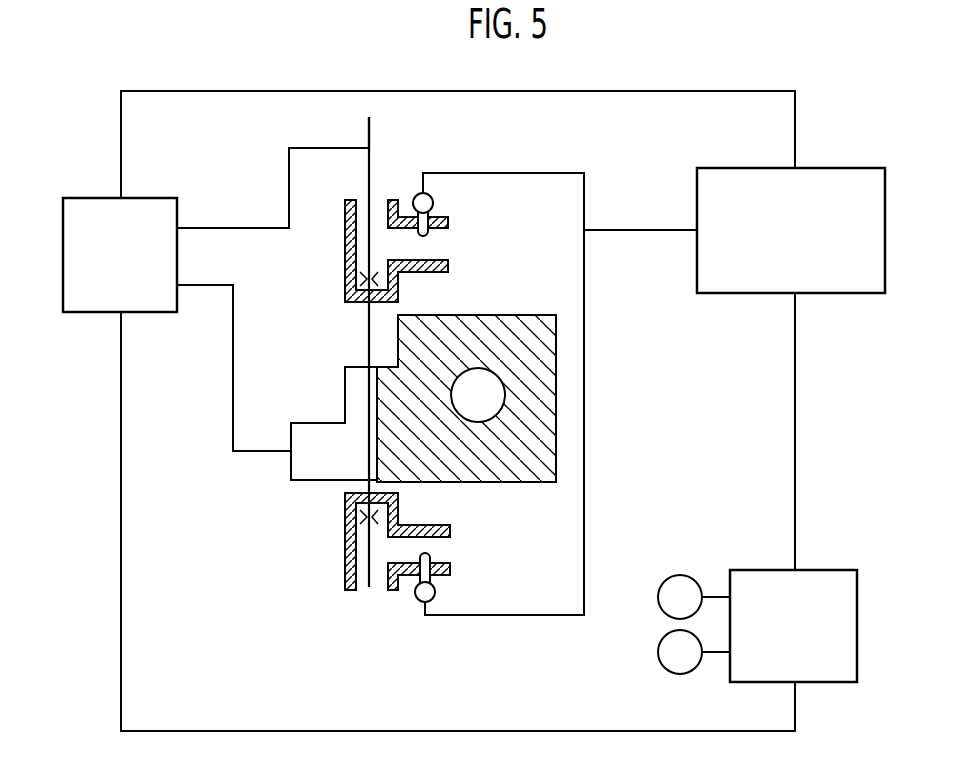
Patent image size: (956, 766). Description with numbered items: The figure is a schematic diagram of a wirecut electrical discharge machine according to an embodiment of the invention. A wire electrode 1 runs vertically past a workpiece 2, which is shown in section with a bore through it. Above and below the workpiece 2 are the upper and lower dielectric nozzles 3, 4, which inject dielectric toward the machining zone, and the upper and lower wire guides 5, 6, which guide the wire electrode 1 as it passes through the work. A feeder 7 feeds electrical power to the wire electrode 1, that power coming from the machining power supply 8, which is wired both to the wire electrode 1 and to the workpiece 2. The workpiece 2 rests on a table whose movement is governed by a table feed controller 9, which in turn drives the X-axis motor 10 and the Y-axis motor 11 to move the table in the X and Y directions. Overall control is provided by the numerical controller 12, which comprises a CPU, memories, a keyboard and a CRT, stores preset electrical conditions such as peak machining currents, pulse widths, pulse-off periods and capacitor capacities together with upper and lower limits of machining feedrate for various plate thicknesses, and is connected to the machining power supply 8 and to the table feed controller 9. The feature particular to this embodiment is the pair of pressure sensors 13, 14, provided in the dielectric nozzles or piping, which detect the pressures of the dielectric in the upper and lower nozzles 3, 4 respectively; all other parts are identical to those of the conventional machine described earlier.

The wire electrode 1 is at (372, 168).
The workpiece 2 is at (490, 315).
The upper dielectric nozzle 3 is at (345, 256).
The lower dielectric nozzle 4 is at (345, 556).
The upper wire guide 5 is at (356, 288).
The lower wire guide 6 is at (358, 517).
The feeder 7 is at (369, 136).
The machining power supply 8 is at (93, 313).
The table feed controller 9 is at (858, 596).
The X-axis motor 10 is at (661, 586).
The Y-axis motor 11 is at (661, 645).
The numerical controller 12 is at (845, 168).
The upper pressure sensor 13 is at (433, 201).
The lower pressure sensor 14 is at (417, 603).